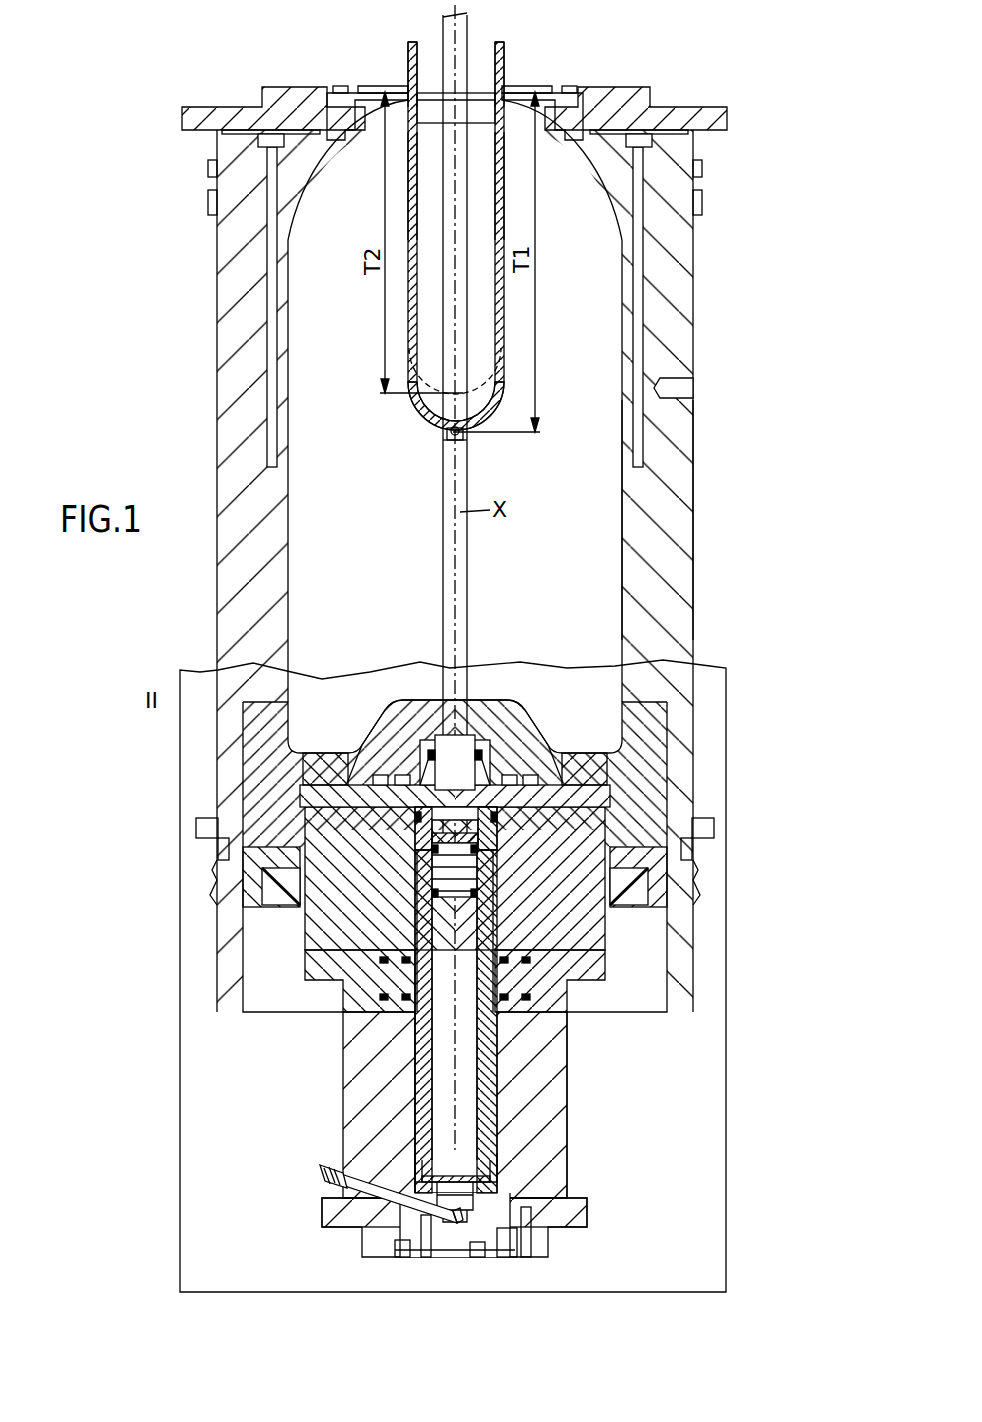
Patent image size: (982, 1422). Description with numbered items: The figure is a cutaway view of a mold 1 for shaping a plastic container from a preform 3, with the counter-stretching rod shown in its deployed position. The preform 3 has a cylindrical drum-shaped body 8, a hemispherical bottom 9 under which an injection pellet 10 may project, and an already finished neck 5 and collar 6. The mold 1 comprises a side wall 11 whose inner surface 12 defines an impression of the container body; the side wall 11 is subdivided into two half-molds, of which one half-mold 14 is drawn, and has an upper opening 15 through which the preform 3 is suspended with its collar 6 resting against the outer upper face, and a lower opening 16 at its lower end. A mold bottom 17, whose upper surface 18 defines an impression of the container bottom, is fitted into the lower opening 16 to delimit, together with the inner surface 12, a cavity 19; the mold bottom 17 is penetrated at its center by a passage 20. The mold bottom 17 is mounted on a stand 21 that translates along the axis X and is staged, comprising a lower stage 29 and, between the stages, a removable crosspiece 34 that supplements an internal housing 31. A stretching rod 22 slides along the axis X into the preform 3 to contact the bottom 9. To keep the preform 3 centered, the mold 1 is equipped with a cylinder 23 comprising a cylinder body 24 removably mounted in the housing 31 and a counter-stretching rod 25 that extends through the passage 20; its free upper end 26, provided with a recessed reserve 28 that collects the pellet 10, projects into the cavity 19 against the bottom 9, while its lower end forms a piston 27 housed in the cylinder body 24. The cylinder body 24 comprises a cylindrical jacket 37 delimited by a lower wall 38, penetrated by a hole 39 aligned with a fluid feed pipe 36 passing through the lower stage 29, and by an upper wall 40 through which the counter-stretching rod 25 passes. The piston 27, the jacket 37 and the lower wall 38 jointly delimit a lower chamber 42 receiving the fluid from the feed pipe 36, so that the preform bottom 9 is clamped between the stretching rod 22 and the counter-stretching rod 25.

The mold 1 is at (700, 193).
The preform 3 is at (510, 297).
The neck 5 is at (503, 54).
The collar 6 is at (500, 100).
The body 8 is at (503, 199).
The hemispherical bottom 9 is at (492, 412).
The pellet 10 is at (451, 434).
The side wall 11 is at (625, 518).
The inner surface 12 is at (645, 580).
The half-mold 14 is at (690, 413).
The upper opening 15 is at (403, 95).
The lower opening 16 is at (566, 787).
The mold bottom 17 is at (372, 738).
The upper surface 18 is at (400, 712).
The cavity 19 is at (373, 527).
The passage 20 is at (443, 714).
The stand 21 is at (575, 1062).
The stretching rod 22 is at (448, 32).
The cylinder 23 is at (408, 1072).
The cylinder body 24 is at (415, 1117).
The counter-stretching rod 25 is at (466, 584).
The free upper end 26 is at (462, 437).
The piston 27 is at (437, 898).
The recessed reserve 28 is at (448, 445).
The lower stage 29 is at (568, 1111).
The housing 31 is at (504, 1084).
The crosspiece 34 is at (305, 968).
The fluid feed pipe 36 is at (462, 1208).
The cylindrical jacket 37 is at (423, 985).
The lower wall 38 is at (433, 1187).
The hole 39 is at (468, 1192).
The upper wall 40 is at (418, 830).
The lower chamber 42 is at (470, 1058).